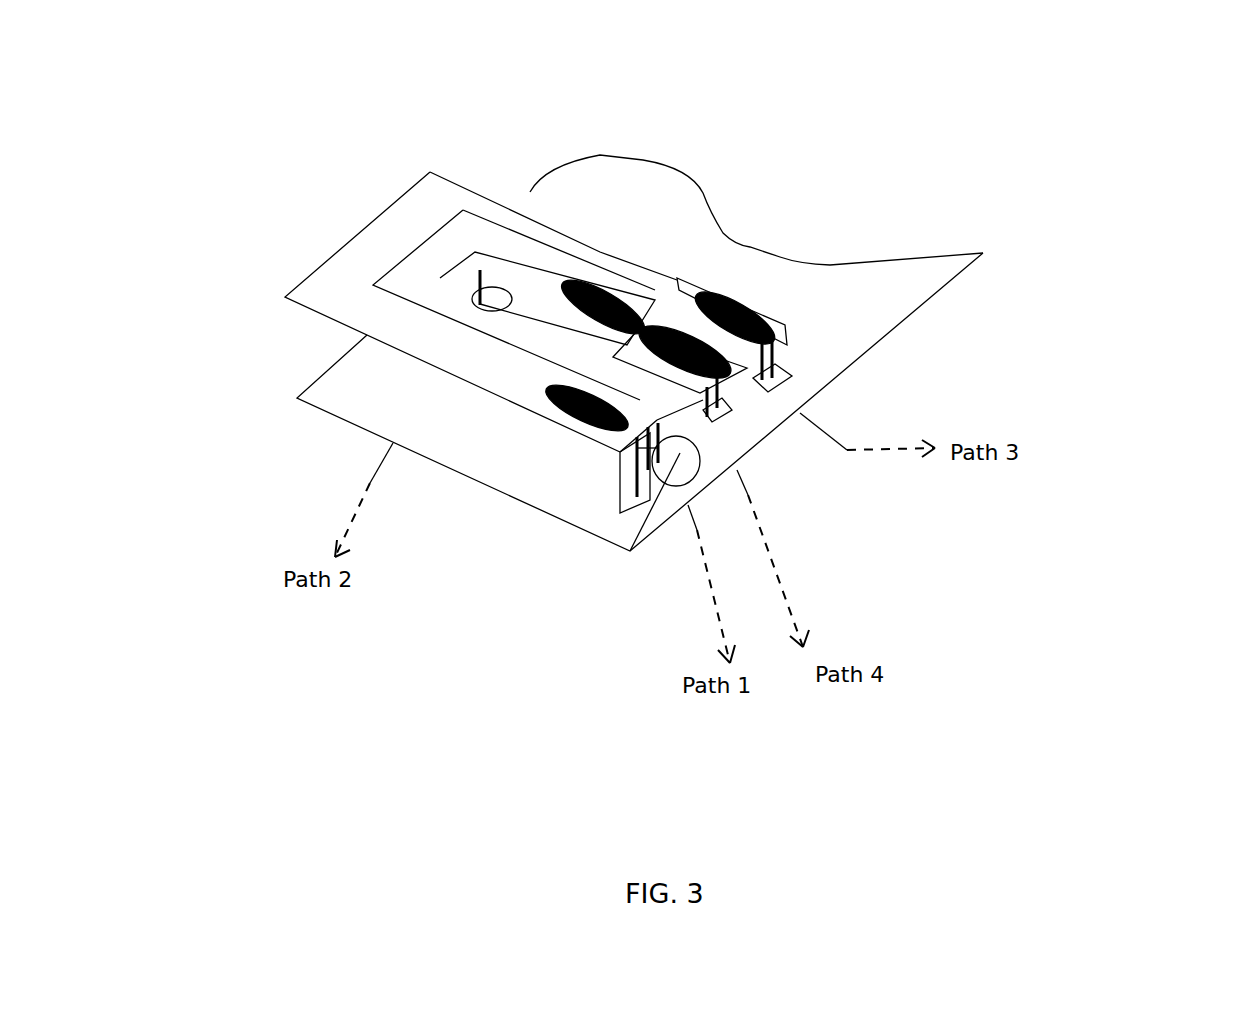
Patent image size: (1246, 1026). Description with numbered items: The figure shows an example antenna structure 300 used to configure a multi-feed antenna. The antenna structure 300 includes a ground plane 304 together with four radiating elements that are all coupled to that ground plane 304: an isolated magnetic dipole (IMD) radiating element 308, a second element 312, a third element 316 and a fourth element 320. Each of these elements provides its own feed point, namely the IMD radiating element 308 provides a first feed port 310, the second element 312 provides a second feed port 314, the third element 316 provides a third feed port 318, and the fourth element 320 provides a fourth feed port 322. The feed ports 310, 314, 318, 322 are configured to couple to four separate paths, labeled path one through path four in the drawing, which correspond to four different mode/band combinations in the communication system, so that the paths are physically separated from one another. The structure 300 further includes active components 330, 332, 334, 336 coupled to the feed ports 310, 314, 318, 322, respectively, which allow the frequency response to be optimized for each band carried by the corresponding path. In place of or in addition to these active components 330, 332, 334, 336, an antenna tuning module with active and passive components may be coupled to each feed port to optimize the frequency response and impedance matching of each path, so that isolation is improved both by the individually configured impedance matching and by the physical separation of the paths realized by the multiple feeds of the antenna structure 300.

The antenna structure 300 is at (1093, 68).
The ground plane 304 is at (642, 175).
The isolated magnetic dipole (IMD) radiating element 308 is at (335, 278).
The first feed port 310 is at (630, 553).
The second element 312 is at (503, 262).
The second feed port 314 is at (480, 304).
The third element 316 is at (685, 276).
The third feed port 318 is at (773, 342).
The fourth element 320 is at (680, 378).
The fourth feed port 322 is at (720, 410).
The active component 330 is at (570, 428).
The active component 332 is at (598, 295).
The active component 334 is at (750, 305).
The active component 336 is at (793, 373).